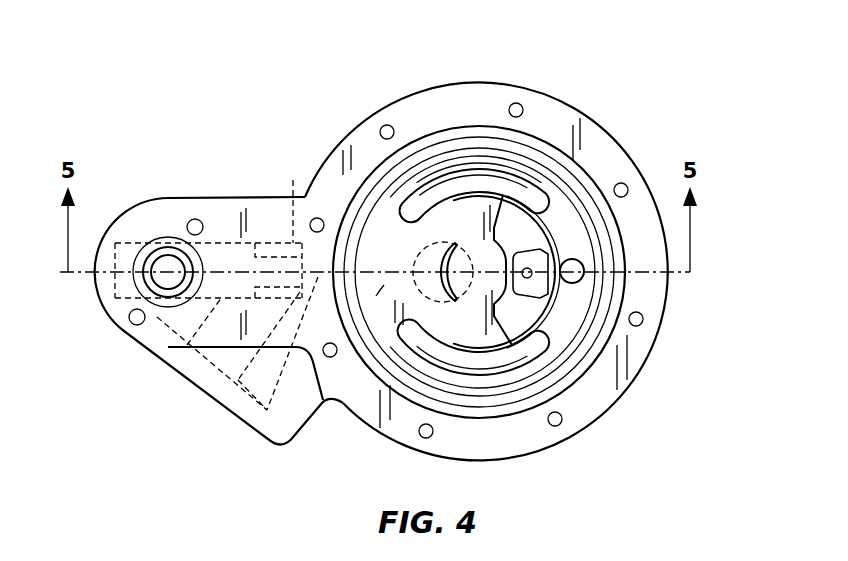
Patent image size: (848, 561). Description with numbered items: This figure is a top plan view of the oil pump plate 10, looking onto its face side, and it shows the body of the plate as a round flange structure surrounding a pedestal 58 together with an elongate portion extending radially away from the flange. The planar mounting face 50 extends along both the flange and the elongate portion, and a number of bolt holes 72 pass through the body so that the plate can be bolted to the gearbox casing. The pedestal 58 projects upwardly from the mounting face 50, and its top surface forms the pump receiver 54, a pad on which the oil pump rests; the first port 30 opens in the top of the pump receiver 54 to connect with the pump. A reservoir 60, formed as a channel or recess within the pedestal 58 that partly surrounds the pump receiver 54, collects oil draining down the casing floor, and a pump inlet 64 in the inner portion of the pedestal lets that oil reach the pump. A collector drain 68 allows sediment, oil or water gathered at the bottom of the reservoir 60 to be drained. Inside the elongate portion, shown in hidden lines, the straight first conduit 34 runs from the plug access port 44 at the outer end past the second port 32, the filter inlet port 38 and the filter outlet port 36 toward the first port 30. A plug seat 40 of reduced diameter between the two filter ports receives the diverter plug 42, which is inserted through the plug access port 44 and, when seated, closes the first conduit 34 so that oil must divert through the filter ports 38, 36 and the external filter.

The oil pump plate 10 is at (603, 125).
The first port 30 is at (445, 247).
The second port 32 is at (167, 252).
The first conduit 34 is at (383, 303).
The filter outlet port 36 is at (262, 398).
The filter inlet port 38 is at (168, 345).
The plug seat 40 is at (293, 180).
The diverter plug 42 is at (282, 240).
The plug access port 44 is at (118, 287).
The mounting face 50 is at (178, 208).
The pump receiver 54 is at (500, 262).
The pedestal 58 is at (378, 220).
The reservoir 60 is at (540, 340).
The pump inlet 64 is at (525, 238).
The collector drain 68 is at (583, 282).
The bolt holes 72 is at (557, 424).